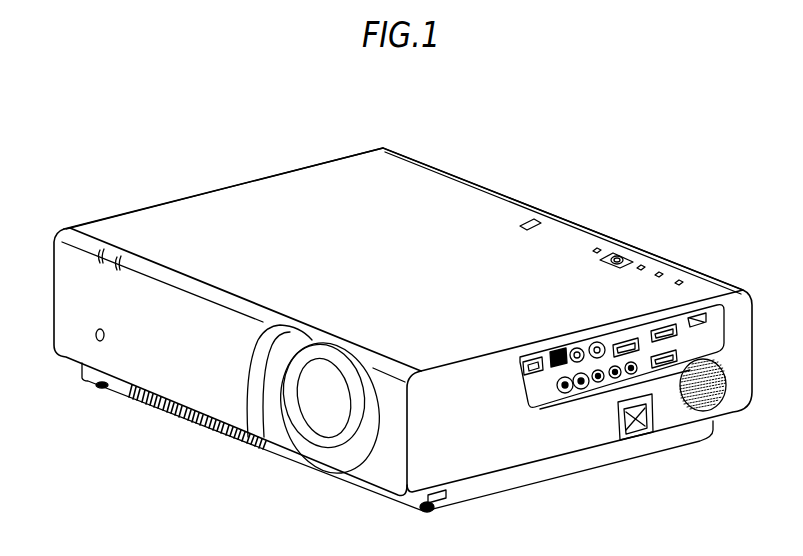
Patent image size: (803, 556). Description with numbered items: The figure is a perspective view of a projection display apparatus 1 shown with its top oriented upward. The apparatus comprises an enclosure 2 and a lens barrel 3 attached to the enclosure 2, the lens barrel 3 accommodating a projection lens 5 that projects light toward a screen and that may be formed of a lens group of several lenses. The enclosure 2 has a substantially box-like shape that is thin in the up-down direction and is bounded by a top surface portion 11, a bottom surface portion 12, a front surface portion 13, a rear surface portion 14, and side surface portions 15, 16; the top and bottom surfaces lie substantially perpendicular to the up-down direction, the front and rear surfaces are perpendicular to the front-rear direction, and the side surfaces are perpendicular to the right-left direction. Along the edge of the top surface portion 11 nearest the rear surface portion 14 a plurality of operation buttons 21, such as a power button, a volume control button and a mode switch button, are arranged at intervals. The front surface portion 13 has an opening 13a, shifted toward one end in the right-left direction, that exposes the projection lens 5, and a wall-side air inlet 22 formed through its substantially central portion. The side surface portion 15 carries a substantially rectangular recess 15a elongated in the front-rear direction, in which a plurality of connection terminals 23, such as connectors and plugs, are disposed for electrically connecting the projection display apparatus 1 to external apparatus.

The projection display apparatus 1 is at (646, 120).
The enclosure 2 is at (234, 174).
The lens barrel 3 is at (316, 440).
The projection lens 5 is at (322, 413).
The top surface portion 11 is at (425, 187).
The bottom surface portion 12 is at (650, 456).
The front surface portion 13 is at (130, 368).
The opening 13a is at (335, 425).
The rear surface portion 14 is at (597, 234).
The side surface portion 15 is at (527, 460).
The recess 15a is at (577, 394).
The side surface portion 16 is at (185, 198).
The operation buttons 21 is at (652, 270).
The wall-side air inlet 22 is at (190, 420).
The connection terminals 23 is at (705, 331).